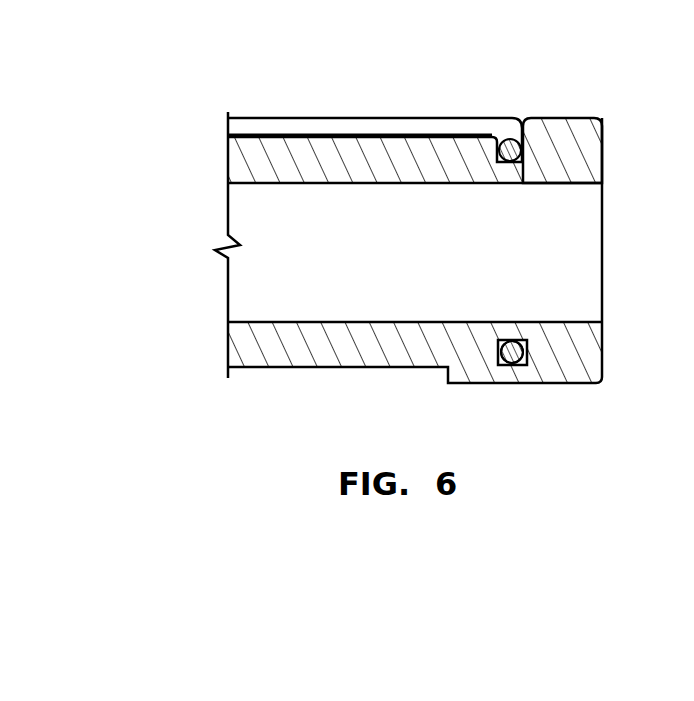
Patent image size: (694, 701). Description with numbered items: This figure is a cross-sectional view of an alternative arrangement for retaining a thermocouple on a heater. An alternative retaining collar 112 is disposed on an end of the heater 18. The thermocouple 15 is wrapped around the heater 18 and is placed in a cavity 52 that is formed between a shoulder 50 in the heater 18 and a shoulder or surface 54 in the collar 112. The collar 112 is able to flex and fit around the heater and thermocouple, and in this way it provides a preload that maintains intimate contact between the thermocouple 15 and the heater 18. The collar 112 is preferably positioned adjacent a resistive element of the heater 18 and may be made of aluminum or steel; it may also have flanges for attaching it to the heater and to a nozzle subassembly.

The thermocouple 15 is at (313, 117).
The heater 18 is at (236, 159).
The retaining collar 112 is at (563, 118).
The cavity 52 is at (520, 344).
The shoulder 50 is at (513, 364).
The shoulder or surface 54 is at (514, 352).